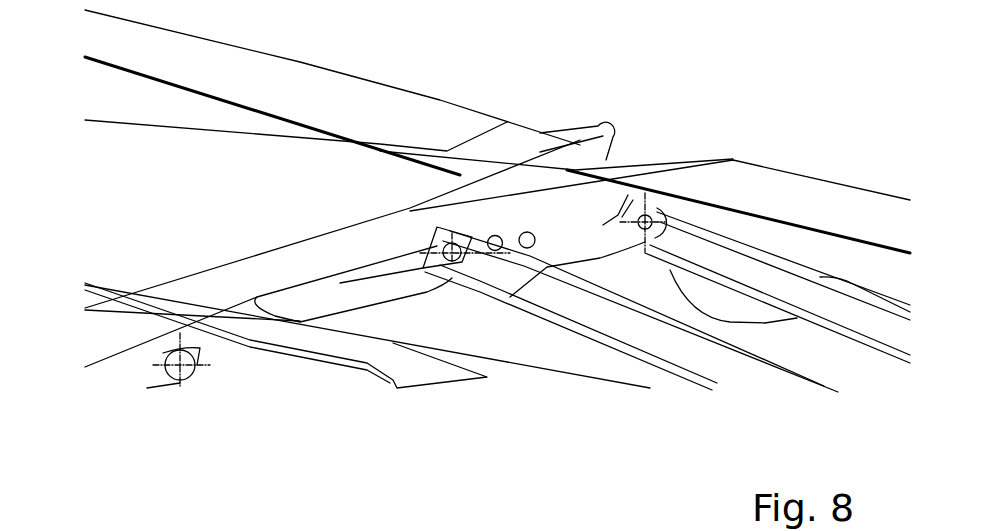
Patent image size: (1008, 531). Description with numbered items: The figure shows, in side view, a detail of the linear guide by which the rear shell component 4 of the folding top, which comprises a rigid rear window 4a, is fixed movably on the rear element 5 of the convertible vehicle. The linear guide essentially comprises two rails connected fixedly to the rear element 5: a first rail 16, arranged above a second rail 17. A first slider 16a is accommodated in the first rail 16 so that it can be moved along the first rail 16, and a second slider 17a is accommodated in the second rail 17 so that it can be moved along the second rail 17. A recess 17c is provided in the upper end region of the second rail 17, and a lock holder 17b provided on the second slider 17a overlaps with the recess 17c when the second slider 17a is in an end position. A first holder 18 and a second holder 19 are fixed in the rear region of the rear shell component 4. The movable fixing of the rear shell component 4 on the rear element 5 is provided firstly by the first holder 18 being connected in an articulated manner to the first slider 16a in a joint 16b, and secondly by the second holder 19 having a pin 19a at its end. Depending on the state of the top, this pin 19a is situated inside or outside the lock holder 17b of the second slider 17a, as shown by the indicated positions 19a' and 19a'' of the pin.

The rear shell component 4 is at (318, 182).
The rigid rear window 4a is at (402, 108).
The rear element 5 is at (865, 213).
The first rail 16 is at (778, 280).
The first slider 16a is at (655, 250).
The joint 16b is at (640, 252).
The second rail 17 is at (718, 360).
The second slider 17a is at (497, 275).
The lock holder 17b is at (438, 228).
The recess 17c is at (488, 230).
The first holder 18 is at (578, 245).
The second holder 19 is at (362, 293).
The pin 19a is at (465, 281).
The indicated position of pin 19a' is at (497, 154).
The indicated position of pin 19a'' is at (552, 225).